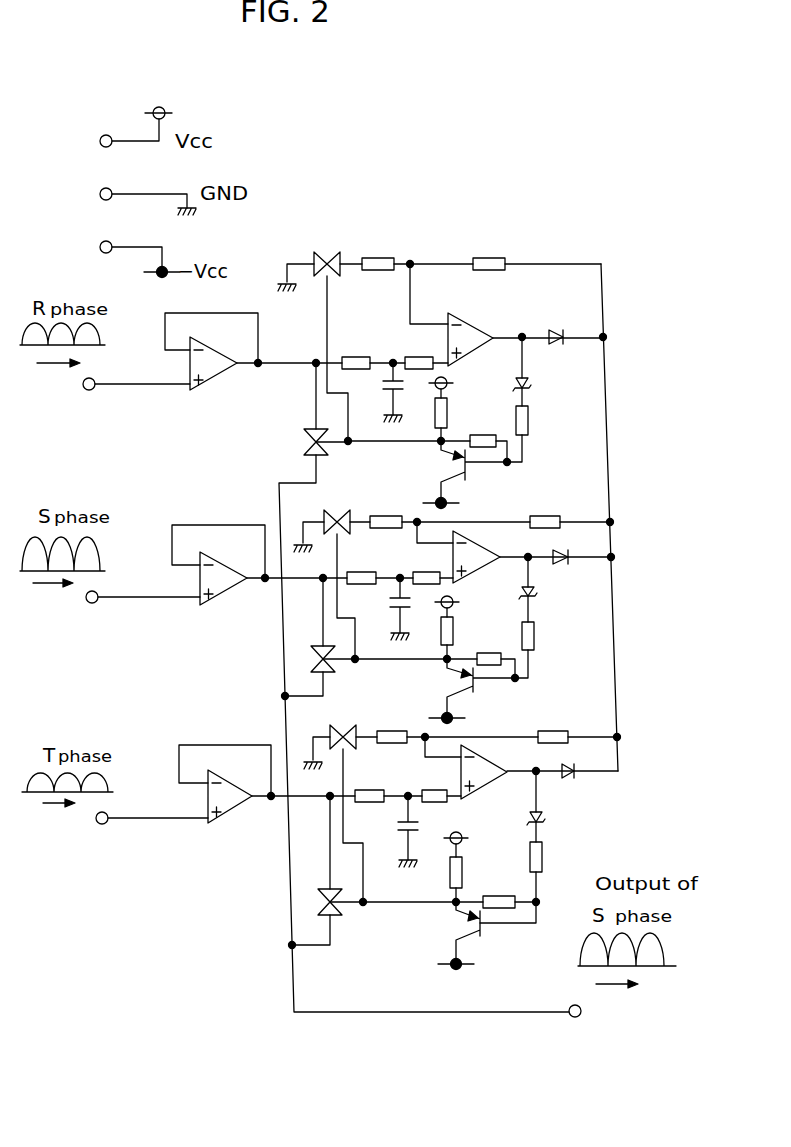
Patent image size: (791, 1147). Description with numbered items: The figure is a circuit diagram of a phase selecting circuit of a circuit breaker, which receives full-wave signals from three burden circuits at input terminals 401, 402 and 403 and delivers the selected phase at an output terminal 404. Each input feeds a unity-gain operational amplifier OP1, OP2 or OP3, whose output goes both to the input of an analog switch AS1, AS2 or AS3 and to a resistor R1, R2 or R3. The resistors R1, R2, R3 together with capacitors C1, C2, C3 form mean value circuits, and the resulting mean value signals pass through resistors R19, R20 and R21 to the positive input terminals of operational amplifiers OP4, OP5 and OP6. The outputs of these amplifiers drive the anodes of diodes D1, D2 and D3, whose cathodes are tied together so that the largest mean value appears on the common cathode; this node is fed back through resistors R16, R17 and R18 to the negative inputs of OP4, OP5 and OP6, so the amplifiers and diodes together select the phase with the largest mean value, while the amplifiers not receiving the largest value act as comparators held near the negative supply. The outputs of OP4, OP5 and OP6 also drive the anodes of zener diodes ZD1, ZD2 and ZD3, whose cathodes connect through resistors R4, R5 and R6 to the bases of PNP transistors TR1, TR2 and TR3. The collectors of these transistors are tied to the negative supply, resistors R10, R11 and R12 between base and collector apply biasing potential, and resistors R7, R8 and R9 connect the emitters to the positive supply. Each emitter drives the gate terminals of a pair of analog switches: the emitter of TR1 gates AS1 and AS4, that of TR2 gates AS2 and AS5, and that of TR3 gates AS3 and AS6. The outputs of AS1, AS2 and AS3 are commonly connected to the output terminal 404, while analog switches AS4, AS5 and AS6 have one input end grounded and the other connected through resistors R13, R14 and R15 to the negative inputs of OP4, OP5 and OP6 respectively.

The input terminal 401 is at (88, 391).
The input terminal 402 is at (91, 604).
The input terminal 403 is at (101, 825).
The output terminal 404 is at (578, 1018).
The operational amplifier OP1 is at (216, 392).
The operational amplifier OP2 is at (226, 607).
The operational amplifier OP3 is at (234, 825).
The operational amplifier OP4 is at (480, 324).
The operational amplifier OP5 is at (480, 533).
The operational amplifier OP6 is at (488, 748).
The analog switch AS1 is at (309, 409).
The analog switch AS2 is at (320, 637).
The analog switch AS3 is at (327, 870).
The analog switch AS4 is at (320, 337).
The analog switch AS5 is at (332, 572).
The analog switch AS6 is at (340, 802).
The resistor R1 is at (354, 350).
The resistor R2 is at (361, 567).
The resistor R3 is at (369, 784).
The resistor R4 is at (532, 434).
The resistor R5 is at (538, 650).
The resistor R6 is at (526, 882).
The resistor R7 is at (431, 409).
The resistor R8 is at (437, 627).
The resistor R9 is at (445, 867).
The resistor R10 is at (486, 436).
The resistor R11 is at (493, 652).
The resistor R12 is at (509, 890).
The resistor R13 is at (386, 251).
The resistor R14 is at (393, 511).
The resistor R15 is at (401, 726).
The resistor R16 is at (505, 251).
The resistor R17 is at (513, 509).
The resistor R18 is at (521, 723).
The resistor R19 is at (420, 350).
The resistor R20 is at (426, 567).
The resistor R21 is at (434, 784).
The capacitor C1 is at (382, 392).
The capacitor C2 is at (389, 609).
The capacitor C3 is at (394, 831).
The diode D1 is at (543, 320).
The diode D2 is at (551, 543).
The diode D3 is at (559, 758).
The zener diode ZD1 is at (540, 371).
The zener diode ZD2 is at (549, 589).
The zener diode ZD3 is at (559, 806).
The transistor TR1 is at (453, 475).
The transistor TR2 is at (460, 691).
The transistor TR3 is at (447, 936).